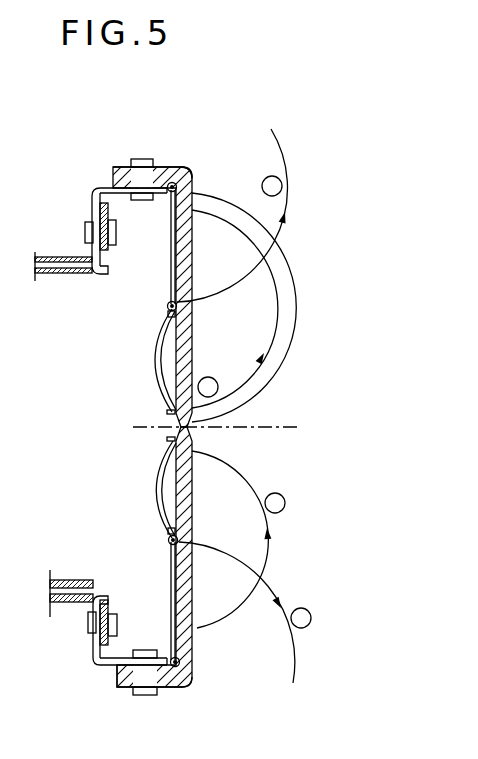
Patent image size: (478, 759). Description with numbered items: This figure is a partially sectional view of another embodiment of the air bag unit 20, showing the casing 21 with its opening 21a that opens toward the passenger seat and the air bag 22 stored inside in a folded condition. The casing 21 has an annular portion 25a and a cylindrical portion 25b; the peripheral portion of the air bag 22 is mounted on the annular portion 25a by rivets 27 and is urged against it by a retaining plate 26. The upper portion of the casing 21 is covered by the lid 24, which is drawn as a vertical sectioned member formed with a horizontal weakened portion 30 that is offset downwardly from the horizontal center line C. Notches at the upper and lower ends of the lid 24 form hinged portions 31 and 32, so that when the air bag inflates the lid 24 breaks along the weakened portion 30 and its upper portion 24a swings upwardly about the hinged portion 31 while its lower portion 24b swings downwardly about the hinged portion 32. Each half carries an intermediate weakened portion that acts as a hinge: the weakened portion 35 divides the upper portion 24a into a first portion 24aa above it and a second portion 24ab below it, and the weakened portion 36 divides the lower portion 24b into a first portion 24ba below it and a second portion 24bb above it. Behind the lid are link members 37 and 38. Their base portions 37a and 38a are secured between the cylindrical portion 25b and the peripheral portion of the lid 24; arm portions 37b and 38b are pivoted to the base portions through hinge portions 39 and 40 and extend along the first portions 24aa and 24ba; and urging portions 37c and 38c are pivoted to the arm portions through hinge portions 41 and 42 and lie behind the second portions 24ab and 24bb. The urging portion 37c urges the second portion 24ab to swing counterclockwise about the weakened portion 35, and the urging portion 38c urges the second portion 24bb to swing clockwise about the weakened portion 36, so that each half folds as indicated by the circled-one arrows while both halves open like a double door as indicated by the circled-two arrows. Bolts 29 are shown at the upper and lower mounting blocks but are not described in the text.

The air bag unit 20 is at (62, 149).
The casing 21 is at (93, 190).
The opening 21a is at (157, 167).
The air bag 22 is at (53, 278).
The lid 24 is at (196, 260).
The upper portion 24a is at (192, 342).
The first portion 24aa is at (192, 303).
The second portion 24ab is at (192, 372).
The lower portion 24b is at (193, 583).
The first portion 24ba is at (193, 617).
The second portion 24bb is at (193, 463).
The annular portion 25a is at (99, 208).
The cylindrical portion 25b is at (136, 428).
The retaining plate 26 is at (107, 276).
The rivets 27 is at (85, 233).
The bolt 29 is at (143, 158).
The weakened portion 30 is at (200, 428).
The hinged portion 31 is at (192, 173).
The hinged portion 32 is at (196, 686).
The weakened portion 35 is at (180, 307).
The weakened portion 36 is at (178, 540).
The link member 37 is at (128, 259).
The base portion 37a is at (128, 222).
The arm portion 37b is at (163, 293).
The urging portion 37c is at (157, 383).
The link member 38 is at (129, 586).
The base portion 38a is at (130, 687).
The arm portion 38b is at (162, 569).
The urging portion 38c is at (158, 488).
The hinge portion 39 is at (192, 190).
The hinge portion 40 is at (185, 665).
The hinge portion 41 is at (167, 318).
The hinge portion 42 is at (172, 548).
The horizontal center line C is at (218, 417).